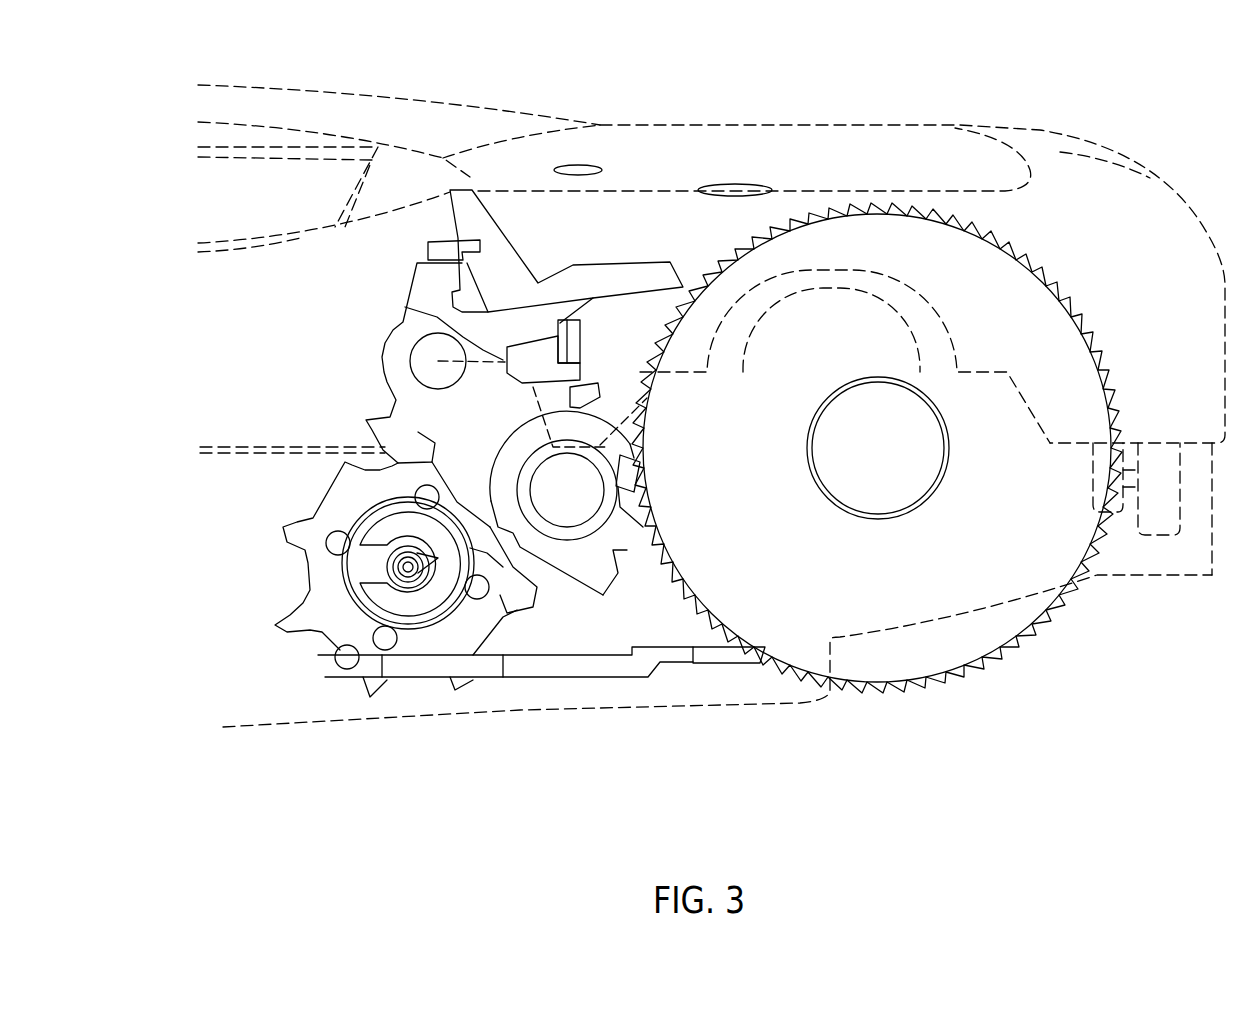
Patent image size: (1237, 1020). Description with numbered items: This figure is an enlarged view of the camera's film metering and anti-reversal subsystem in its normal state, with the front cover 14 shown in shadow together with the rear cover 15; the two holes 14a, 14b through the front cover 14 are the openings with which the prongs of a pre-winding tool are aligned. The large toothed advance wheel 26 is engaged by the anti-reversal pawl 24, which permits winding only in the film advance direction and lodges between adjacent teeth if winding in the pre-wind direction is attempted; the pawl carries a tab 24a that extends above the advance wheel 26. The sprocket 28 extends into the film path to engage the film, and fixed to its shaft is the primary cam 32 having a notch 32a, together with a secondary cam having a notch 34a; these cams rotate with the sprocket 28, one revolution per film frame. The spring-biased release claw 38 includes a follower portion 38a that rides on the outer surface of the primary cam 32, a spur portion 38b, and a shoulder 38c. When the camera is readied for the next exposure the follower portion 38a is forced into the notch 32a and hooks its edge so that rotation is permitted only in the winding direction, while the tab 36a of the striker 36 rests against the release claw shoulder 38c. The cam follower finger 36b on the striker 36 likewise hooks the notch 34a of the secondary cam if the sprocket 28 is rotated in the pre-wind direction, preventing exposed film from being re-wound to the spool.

The front cover 14 is at (1103, 195).
The hole through the front cover 14a is at (587, 163).
The hole through the front cover 14b is at (737, 183).
The rear cover 15 is at (1157, 577).
The anti-reversal pawl 24 is at (573, 668).
The tab 24a is at (742, 652).
The advance wheel 26 is at (985, 570).
The sprocket 28 is at (298, 630).
The primary cam 32 is at (417, 625).
The notch 32a is at (518, 612).
The notch 34a is at (305, 560).
The striker 36 is at (628, 552).
The tab 36a is at (407, 307).
The cam follower finger 36b is at (517, 243).
The release claw 38 is at (387, 373).
The follower portion 38a is at (503, 557).
The spur portion 38b is at (648, 405).
The release claw shoulder 38c is at (572, 327).